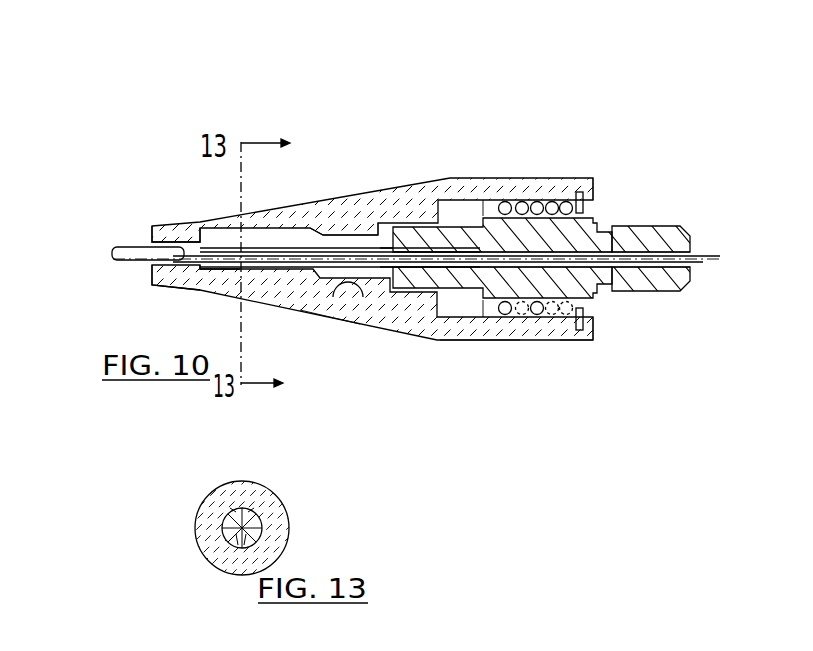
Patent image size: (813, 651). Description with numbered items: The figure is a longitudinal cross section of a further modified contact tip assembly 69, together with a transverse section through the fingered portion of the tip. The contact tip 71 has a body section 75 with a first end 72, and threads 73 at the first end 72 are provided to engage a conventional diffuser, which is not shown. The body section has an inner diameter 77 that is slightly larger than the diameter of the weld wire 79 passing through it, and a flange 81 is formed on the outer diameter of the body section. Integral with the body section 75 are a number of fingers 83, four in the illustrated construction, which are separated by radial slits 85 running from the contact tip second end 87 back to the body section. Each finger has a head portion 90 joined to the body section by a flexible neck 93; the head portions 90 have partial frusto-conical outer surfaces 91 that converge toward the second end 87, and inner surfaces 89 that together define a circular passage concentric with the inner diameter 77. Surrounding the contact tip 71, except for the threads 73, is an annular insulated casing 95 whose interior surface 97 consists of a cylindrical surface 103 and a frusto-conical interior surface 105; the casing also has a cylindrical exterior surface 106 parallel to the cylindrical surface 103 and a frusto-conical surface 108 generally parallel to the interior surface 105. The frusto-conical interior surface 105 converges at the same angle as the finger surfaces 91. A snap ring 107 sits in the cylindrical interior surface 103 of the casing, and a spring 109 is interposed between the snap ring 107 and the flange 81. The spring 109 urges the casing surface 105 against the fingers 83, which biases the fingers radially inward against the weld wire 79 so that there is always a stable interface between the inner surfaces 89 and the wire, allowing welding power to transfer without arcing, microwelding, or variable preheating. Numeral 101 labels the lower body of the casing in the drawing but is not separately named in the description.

In FIG. 10, the contact tip assembly 69 is at (722, 328).
In FIG. 10, the contact tip 71 is at (693, 234).
In FIG. 10, the first end 72 is at (690, 278).
In FIG. 10, the threads 73 is at (655, 227).
In FIG. 10, the body section 75 is at (658, 300).
In FIG. 10, the inner diameter 77 is at (527, 263).
In FIG. 10, the weld wire 79 is at (118, 247).
In FIG. 10, the flange 81 is at (485, 213).
In FIG. 10, the fingers 83 is at (345, 237).
In FIG. 13, the fingers 83 is at (265, 507).
In FIG. 13, the radial slits 85 is at (237, 545).
In FIG. 10, the second end 87 is at (190, 268).
In FIG. 10, the inner surfaces 89 is at (222, 270).
In FIG. 10, the head portions 90 is at (221, 240).
In FIG. 10, the partial frusto-conical outer surfaces 91 is at (268, 248).
In FIG. 10, the flexible necks 93 is at (378, 250).
In FIG. 10, the insulated casing 95 is at (580, 345).
In FIG. 10, the interior surface 97 is at (330, 298).
In FIG. 10, the lower housing body 101 is at (400, 337).
In FIG. 10, the cylindrical surface 103 is at (583, 212).
In FIG. 10, the frusto-conical interior surface 105 is at (282, 235).
In FIG. 10, the cylindrical exterior surface 106 is at (475, 333).
In FIG. 10, the snap ring 107 is at (580, 313).
In FIG. 10, the frusto-conical surface 108 is at (348, 290).
In FIG. 10, the spring 109 is at (533, 210).